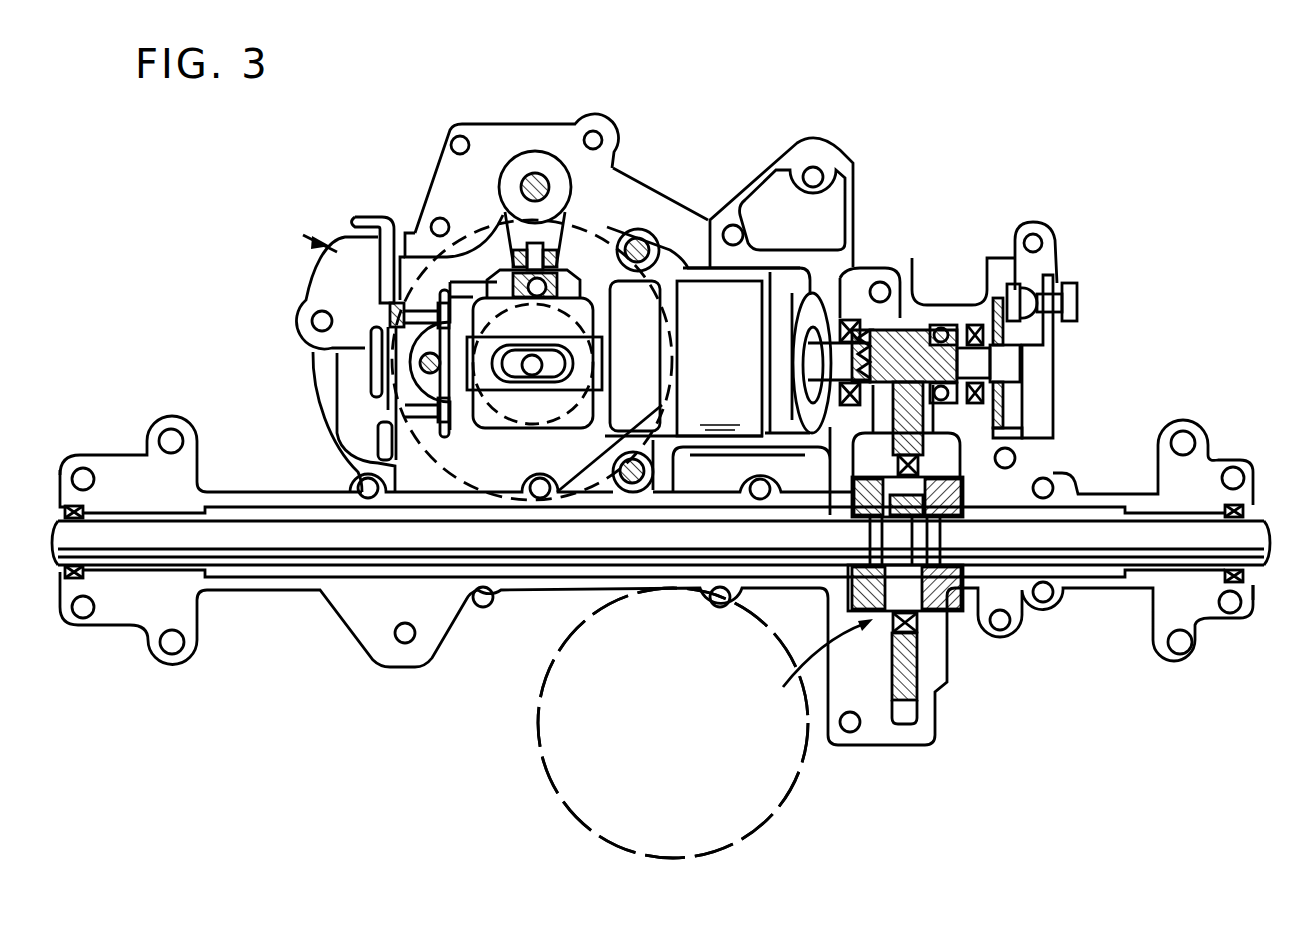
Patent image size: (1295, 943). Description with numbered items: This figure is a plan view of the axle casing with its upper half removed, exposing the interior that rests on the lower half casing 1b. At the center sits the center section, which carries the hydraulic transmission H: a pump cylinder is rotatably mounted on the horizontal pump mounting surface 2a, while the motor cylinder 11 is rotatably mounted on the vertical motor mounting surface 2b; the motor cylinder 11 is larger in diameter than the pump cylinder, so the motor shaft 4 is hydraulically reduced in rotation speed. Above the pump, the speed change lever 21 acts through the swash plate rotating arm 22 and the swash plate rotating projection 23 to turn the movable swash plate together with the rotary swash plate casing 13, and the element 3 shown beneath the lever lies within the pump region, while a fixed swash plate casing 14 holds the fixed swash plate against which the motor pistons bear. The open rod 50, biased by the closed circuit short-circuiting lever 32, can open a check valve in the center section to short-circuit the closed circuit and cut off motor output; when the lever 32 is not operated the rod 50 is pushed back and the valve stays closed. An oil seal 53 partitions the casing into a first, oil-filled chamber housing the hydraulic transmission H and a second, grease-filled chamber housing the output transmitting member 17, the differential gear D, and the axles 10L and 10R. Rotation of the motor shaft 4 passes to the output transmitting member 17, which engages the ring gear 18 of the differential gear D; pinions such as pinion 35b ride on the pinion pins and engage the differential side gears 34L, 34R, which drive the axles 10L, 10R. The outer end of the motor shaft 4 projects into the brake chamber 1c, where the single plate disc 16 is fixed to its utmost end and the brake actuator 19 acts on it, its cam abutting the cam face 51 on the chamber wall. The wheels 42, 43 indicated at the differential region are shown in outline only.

The speed change lever 21 is at (522, 177).
The swash plate rotating arm 22 is at (557, 207).
The swash plate rotating projection 23 is at (540, 283).
The pump mounting surface 2a is at (550, 437).
The motor mounting surface 2b is at (692, 245).
The shift lever slot 3 is at (537, 367).
The motor cylinder 11 is at (737, 379).
The rotary swash plate casing 13 is at (450, 462).
The fixed swash plate casing 14 is at (860, 277).
The oil seal 53 is at (895, 340).
The output transmitting member 17 is at (892, 342).
The motor shaft 4 is at (913, 365).
The cam face 51 is at (1045, 290).
The brake actuator 19 is at (1077, 308).
The brake chamber 1c is at (1023, 393).
The single plate disc 16 is at (1000, 408).
The differential side gear 34L is at (968, 498).
The differential side gear 34R is at (845, 592).
The pinion 35b is at (925, 605).
The ring gear 18 is at (917, 690).
The differential gear D is at (810, 666).
The wheel 42 is at (822, 811).
The wheel 43 is at (673, 723).
The axle 10R is at (560, 537).
The axle 10L is at (1000, 540).
The lower half casing 1b is at (333, 488).
The open rod 50 is at (405, 397).
The closed circuit short-circuiting lever 32 is at (388, 196).
The hydraulic transmission H is at (303, 246).